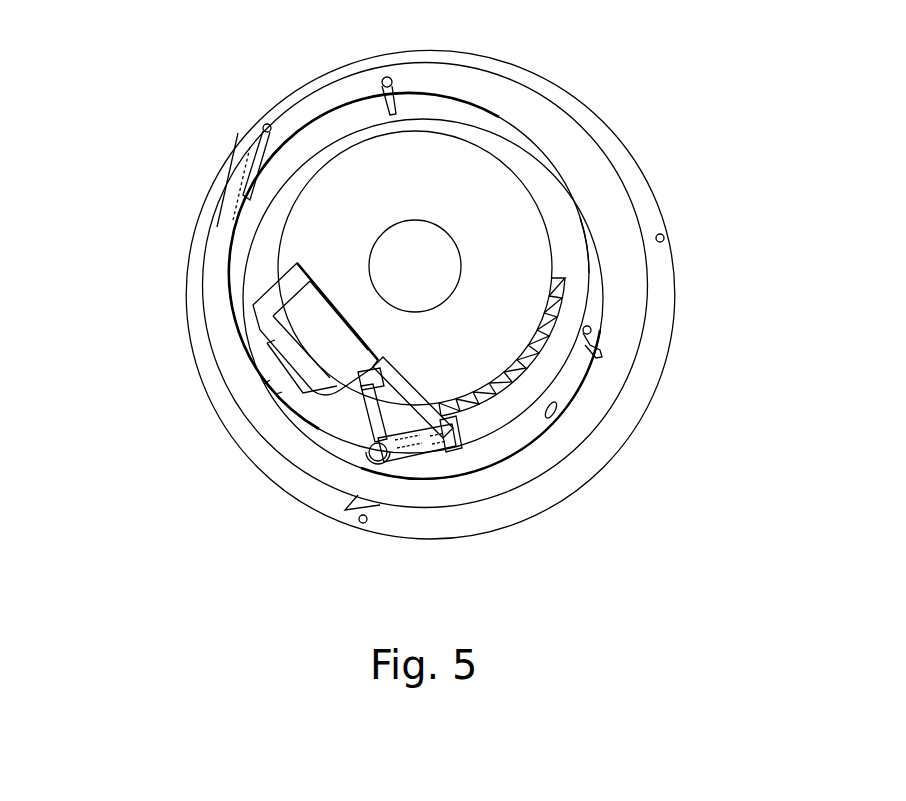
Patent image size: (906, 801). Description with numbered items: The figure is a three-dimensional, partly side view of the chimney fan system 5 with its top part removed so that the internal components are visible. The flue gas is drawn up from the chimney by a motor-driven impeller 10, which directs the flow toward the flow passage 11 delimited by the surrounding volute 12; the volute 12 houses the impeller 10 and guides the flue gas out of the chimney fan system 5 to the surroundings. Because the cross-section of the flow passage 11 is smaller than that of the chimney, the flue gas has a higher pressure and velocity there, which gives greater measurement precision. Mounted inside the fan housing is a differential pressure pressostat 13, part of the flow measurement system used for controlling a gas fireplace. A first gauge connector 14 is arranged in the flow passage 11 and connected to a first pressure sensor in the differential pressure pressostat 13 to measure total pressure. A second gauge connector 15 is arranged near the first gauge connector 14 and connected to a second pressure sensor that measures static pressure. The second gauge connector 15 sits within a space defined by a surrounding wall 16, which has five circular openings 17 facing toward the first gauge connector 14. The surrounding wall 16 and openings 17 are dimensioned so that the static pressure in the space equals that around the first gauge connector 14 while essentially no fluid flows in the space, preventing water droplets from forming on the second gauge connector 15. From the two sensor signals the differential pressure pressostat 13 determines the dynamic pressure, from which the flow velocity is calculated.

The chimney fan system 5 is at (652, 138).
The impeller 10 is at (530, 304).
The flow passage 11 is at (547, 218).
The volute 12 is at (470, 105).
The differential pressure pressostat 13 is at (272, 321).
The first gauge connector 14 is at (412, 457).
The second gauge connector 15 is at (375, 383).
The surrounding wall 16 is at (440, 445).
The circular openings 17 is at (385, 452).